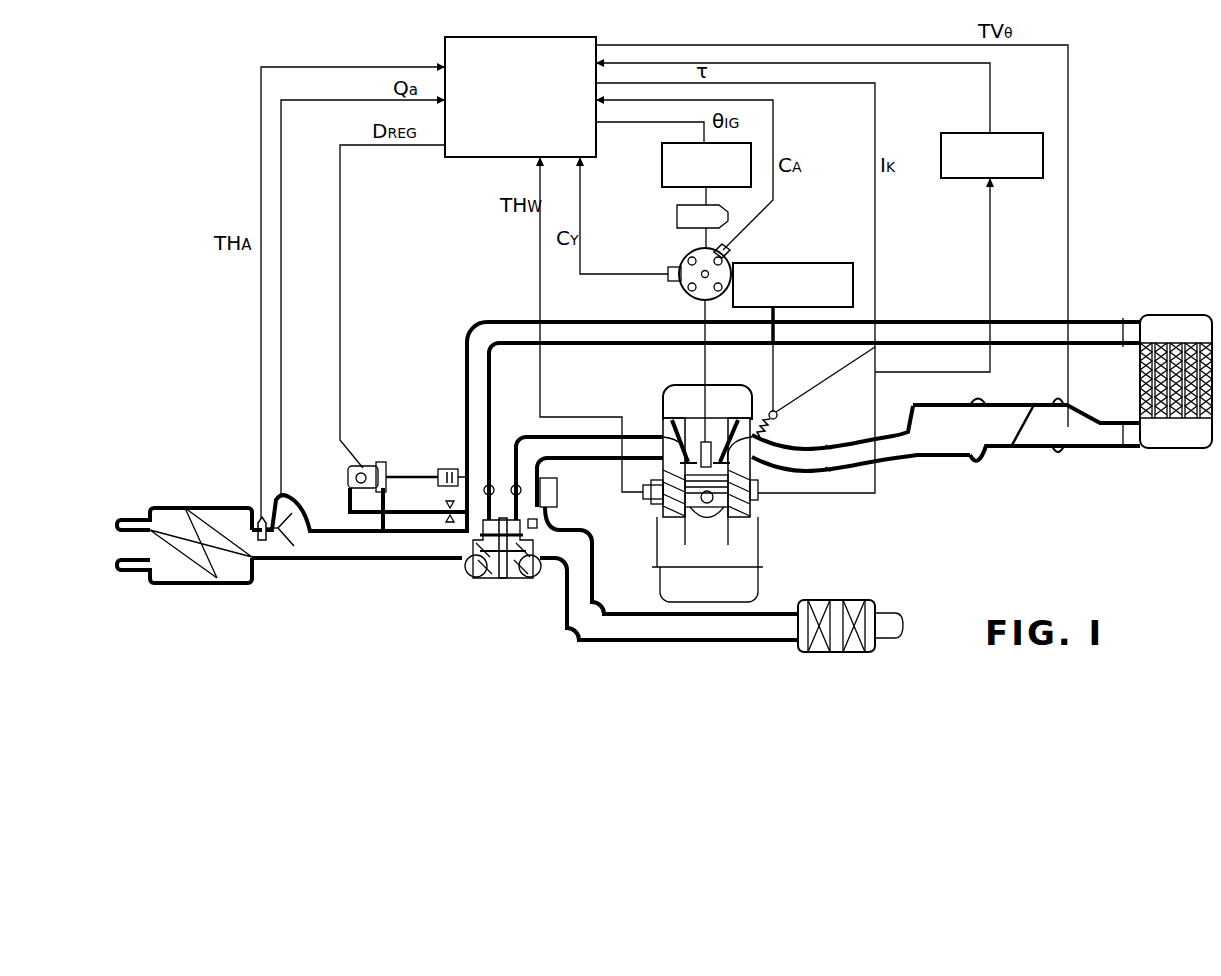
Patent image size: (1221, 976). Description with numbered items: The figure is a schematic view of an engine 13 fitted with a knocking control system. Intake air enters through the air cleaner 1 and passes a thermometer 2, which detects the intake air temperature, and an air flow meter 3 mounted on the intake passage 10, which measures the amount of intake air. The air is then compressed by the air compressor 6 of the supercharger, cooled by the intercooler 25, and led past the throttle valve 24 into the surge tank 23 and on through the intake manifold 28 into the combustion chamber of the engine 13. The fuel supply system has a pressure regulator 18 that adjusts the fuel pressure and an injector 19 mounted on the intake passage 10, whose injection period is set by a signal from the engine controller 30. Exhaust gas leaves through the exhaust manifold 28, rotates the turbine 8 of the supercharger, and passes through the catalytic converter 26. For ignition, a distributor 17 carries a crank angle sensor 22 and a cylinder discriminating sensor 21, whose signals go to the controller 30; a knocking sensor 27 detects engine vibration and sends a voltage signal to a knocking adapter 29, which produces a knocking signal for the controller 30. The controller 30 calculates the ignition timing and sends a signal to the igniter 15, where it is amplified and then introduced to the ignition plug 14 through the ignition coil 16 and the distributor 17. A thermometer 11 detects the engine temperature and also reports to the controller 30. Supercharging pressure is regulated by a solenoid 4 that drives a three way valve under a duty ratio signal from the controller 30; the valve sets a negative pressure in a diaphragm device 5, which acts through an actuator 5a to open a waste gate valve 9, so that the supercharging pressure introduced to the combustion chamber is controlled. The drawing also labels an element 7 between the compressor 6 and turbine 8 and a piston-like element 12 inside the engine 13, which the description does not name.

The air cleaner 1 is at (225, 572).
The thermometer 2 is at (263, 542).
The air flow meter 3 is at (292, 548).
The solenoid 4 is at (378, 468).
The diaphragm device 5 is at (447, 468).
The actuator 5a is at (557, 490).
The air compressor 6 is at (468, 574).
The throttle body 7 is at (500, 580).
The turbine 8 is at (531, 576).
The waste gate valve 9 is at (560, 532).
The intake passage 10 is at (586, 347).
The thermometer 11 is at (647, 495).
The piston 12 is at (705, 505).
The engine 13 is at (758, 538).
The ignition plug 14 is at (718, 415).
The igniter 15 is at (662, 168).
The ignition coil 16 is at (677, 218).
The distributor 17 is at (683, 292).
The pressure regulator 18 is at (805, 263).
The injector 19 is at (783, 424).
The cylinder discriminating sensor 21 is at (668, 277).
The crank angle sensor 22 is at (731, 250).
The surge tank 23 is at (935, 452).
The throttle valve 24 is at (1022, 446).
The intercooler 25 is at (1168, 315).
The catalytic converter 26 is at (836, 652).
The knocking sensor 27 is at (758, 498).
The intake manifold 28 is at (832, 470).
The knocking adapter 29 is at (1026, 178).
The engine controller 30 is at (470, 157).